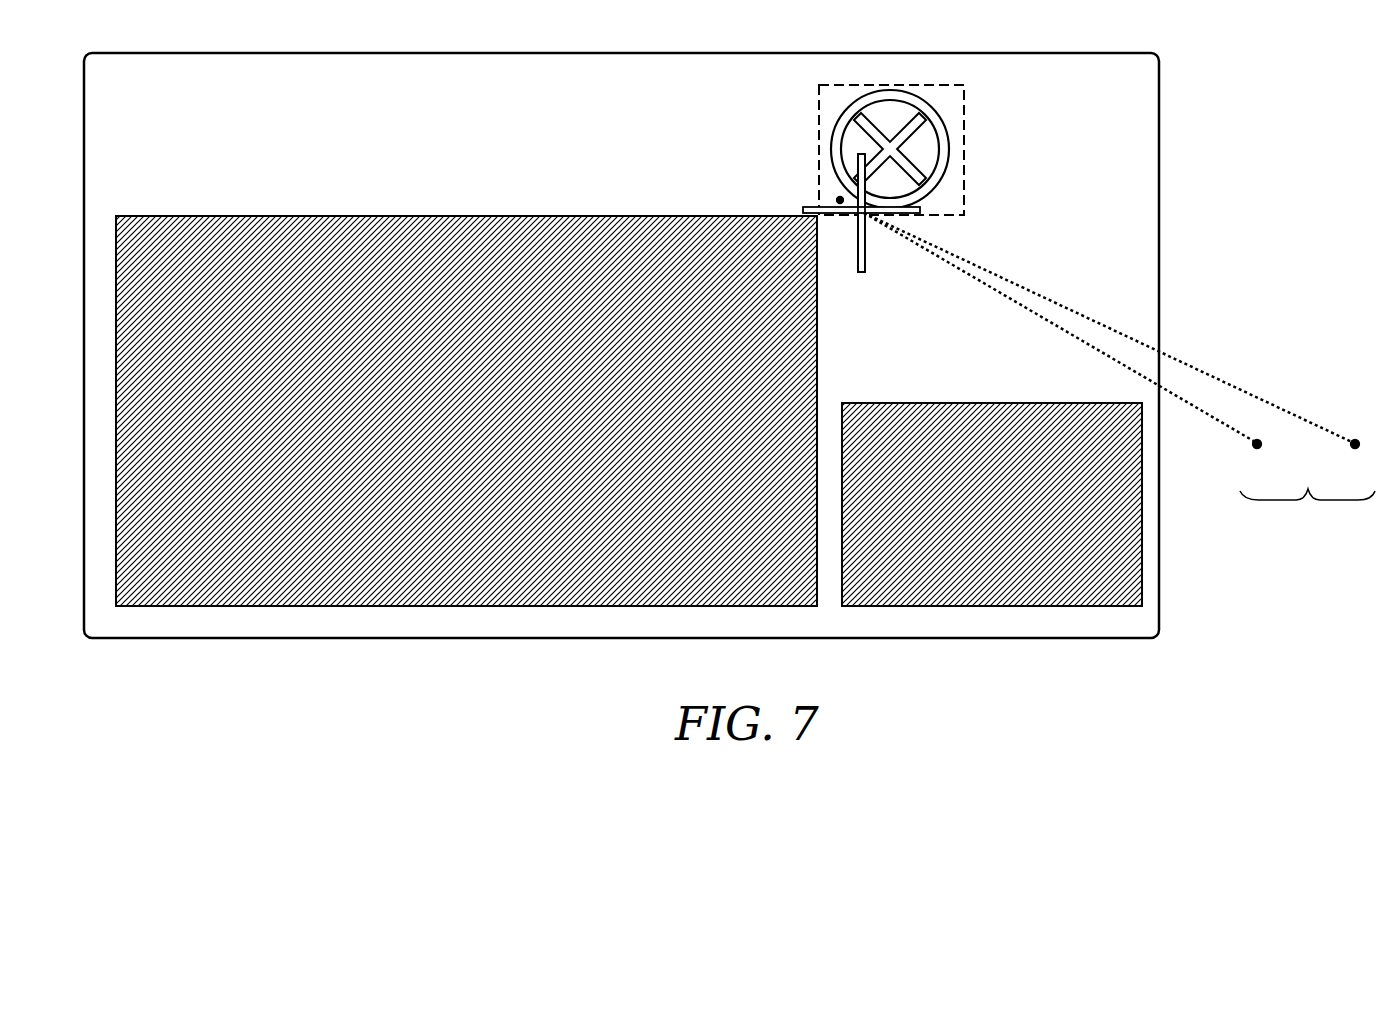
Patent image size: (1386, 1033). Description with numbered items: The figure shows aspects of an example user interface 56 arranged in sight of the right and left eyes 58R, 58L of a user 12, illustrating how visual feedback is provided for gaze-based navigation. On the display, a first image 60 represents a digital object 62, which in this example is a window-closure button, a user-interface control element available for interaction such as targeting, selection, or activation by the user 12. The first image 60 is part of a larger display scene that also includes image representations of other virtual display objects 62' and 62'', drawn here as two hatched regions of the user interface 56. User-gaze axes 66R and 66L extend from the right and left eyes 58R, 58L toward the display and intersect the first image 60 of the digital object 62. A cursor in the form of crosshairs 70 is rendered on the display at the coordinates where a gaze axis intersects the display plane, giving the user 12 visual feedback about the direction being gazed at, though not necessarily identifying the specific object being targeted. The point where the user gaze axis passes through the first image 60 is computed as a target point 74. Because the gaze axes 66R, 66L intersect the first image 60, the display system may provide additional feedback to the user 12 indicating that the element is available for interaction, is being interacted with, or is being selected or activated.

The user interface 56 is at (488, 132).
The digital object 62 is at (855, 138).
The virtual display object 62' is at (466, 411).
The virtual display object 62'' is at (992, 504).
The first image 60 is at (967, 150).
The target point 74 is at (837, 199).
The crosshairs 70 is at (867, 253).
The user-gaze axis 66L is at (1172, 355).
The user-gaze axis 66R is at (1140, 377).
The left eye 58L is at (1363, 459).
The right eye 58R is at (1265, 459).
The user 12 is at (1307, 507).